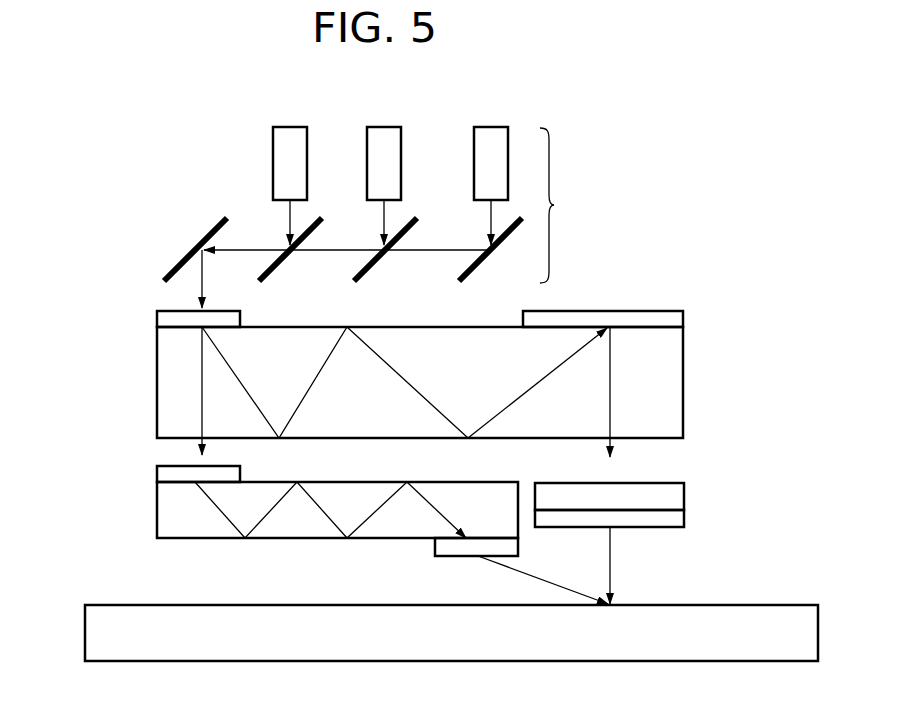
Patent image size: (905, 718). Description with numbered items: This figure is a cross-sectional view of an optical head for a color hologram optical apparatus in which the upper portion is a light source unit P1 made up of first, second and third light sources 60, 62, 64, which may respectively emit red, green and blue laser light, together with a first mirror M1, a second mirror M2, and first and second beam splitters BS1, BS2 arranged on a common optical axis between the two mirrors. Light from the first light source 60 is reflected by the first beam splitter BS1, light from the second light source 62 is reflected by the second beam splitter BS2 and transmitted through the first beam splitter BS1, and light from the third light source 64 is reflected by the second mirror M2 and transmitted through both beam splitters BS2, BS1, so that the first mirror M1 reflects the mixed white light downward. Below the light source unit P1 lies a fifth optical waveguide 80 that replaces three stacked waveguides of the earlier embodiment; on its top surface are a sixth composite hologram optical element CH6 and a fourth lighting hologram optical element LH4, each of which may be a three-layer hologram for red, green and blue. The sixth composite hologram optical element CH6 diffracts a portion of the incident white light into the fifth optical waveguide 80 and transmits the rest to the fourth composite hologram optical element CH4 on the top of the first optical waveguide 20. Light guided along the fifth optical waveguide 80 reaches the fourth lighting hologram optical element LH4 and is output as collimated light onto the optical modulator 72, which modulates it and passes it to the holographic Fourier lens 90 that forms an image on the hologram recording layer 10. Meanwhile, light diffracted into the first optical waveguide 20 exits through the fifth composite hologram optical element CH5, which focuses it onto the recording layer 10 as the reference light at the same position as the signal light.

The first light source 60 is at (291, 137).
The second light source 62 is at (385, 137).
The third light source 64 is at (492, 137).
The first mirror M1 is at (214, 224).
The second mirror M2 is at (475, 267).
The first beam splitter BS1 is at (277, 267).
The second beam splitter BS2 is at (372, 267).
The light source unit P1 is at (569, 205).
The fifth optical waveguide 80 is at (168, 355).
The sixth composite hologram optical element CH6 is at (157, 318).
The fourth lighting hologram optical element LH4 is at (667, 318).
The first optical waveguide 20 is at (168, 510).
The fourth composite hologram optical element CH4 is at (157, 473).
The fifth composite hologram optical element CH5 is at (447, 550).
The optical modulator 72 is at (675, 494).
The holographic Fourier lens 90 is at (675, 520).
The hologram recording layer 10 is at (100, 632).